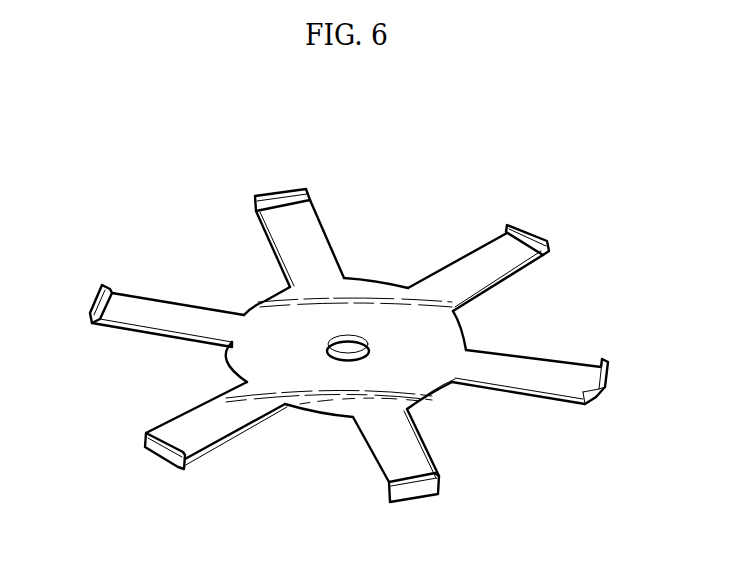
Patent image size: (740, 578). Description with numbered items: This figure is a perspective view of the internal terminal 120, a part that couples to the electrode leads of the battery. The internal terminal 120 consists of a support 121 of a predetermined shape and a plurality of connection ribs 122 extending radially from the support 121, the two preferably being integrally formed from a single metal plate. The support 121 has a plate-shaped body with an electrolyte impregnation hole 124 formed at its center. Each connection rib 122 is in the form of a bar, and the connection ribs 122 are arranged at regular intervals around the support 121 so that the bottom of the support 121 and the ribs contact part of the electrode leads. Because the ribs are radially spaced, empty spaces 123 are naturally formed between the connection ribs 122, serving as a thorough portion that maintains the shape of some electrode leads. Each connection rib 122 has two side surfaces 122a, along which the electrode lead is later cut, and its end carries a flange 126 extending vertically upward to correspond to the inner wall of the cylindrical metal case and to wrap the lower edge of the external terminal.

The internal terminal 120 is at (212, 125).
The support 121 is at (447, 331).
The connection rib 122 is at (500, 253).
The side surface of the connection rib 122a is at (507, 285).
The empty space 123 is at (399, 244).
The electrolyte impregnation hole 124 is at (350, 350).
The flange 126 is at (533, 232).